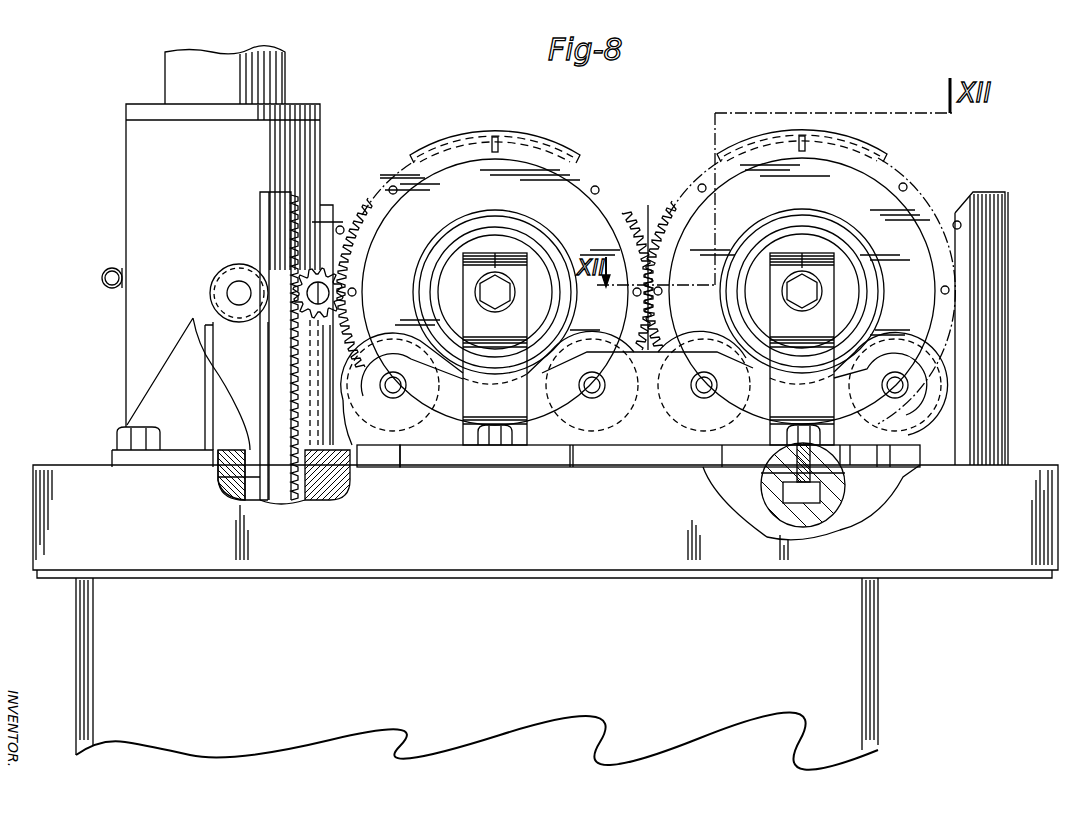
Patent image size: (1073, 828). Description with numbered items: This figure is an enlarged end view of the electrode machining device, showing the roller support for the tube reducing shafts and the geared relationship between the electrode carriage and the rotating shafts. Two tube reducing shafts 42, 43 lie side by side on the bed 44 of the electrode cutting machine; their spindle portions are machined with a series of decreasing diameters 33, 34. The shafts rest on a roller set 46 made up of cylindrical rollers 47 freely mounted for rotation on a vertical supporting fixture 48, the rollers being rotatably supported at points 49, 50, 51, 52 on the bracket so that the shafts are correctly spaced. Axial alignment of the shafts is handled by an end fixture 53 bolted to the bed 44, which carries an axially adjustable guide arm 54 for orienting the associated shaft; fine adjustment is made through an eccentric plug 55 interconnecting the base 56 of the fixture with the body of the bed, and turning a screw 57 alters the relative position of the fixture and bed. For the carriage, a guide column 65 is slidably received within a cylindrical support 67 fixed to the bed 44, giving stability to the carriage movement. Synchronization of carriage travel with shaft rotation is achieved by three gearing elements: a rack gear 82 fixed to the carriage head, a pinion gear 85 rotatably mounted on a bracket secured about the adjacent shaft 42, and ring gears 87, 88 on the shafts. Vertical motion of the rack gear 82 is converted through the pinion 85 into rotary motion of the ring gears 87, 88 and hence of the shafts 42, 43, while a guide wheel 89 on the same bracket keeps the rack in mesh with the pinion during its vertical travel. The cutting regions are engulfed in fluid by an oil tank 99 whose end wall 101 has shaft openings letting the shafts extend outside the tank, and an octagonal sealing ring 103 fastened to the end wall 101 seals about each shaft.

The decreasing diameter 33 is at (448, 228).
The decreasing diameter 34 is at (485, 230).
The tube reducing shaft 42 is at (789, 163).
The tube reducing shaft 43 is at (400, 220).
The bed 44 is at (68, 490).
The roller set 46 is at (641, 436).
The cylindrical roller 47 is at (367, 428).
The vertical supporting fixture 48 is at (436, 430).
The roller support point 49 is at (402, 390).
The roller support point 50 is at (590, 392).
The roller support point 51 is at (702, 392).
The roller support point 52 is at (893, 393).
The end fixture 53 is at (648, 349).
The axially adjustable guide arm 54 is at (497, 287).
The eccentric plug 55 is at (826, 472).
The base 56 is at (857, 455).
The screw 57 is at (780, 488).
The guide column 65 is at (172, 79).
The cylindrical support 67 is at (126, 150).
The rack gear 82 is at (277, 232).
The pinion gear 85 is at (298, 290).
The ring gear 87 is at (362, 226).
The ring gear 88 is at (670, 215).
The guide wheel 89 is at (222, 283).
The oil tank 99 is at (1012, 327).
The end wall 101 is at (980, 208).
The ring 103 is at (930, 214).